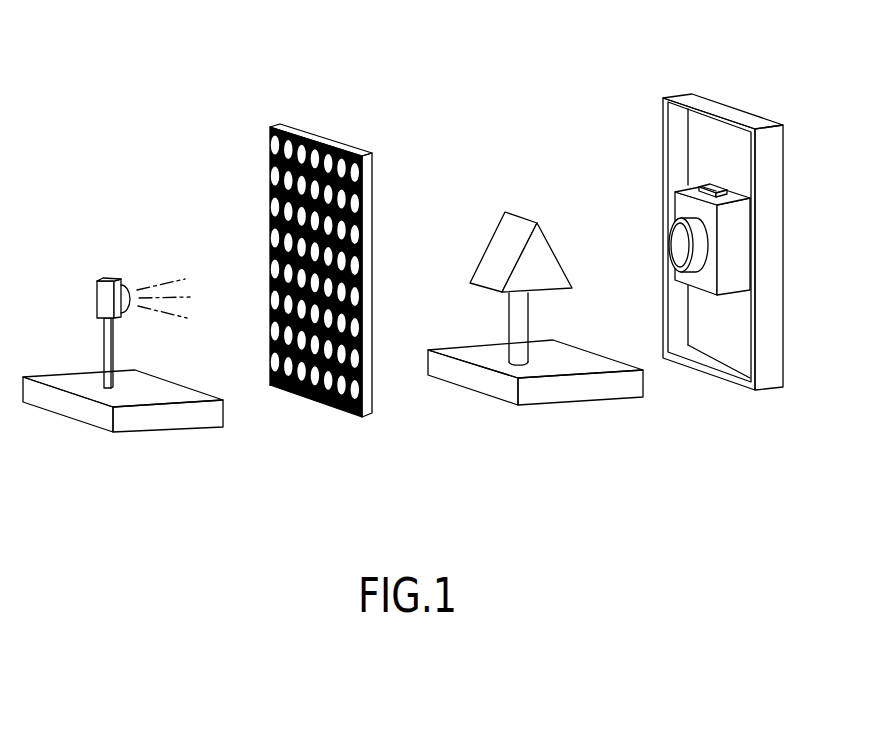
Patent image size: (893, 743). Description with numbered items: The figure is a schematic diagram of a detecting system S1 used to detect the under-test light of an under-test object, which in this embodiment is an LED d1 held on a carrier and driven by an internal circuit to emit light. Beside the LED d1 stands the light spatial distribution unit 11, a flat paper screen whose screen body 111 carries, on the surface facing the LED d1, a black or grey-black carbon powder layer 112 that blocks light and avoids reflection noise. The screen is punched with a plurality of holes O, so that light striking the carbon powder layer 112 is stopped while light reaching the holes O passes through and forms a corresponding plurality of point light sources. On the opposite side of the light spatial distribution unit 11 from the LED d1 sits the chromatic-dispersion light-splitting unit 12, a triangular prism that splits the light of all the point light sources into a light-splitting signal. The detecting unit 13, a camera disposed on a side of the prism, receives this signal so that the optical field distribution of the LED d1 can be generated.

The detecting system S1 is at (142, 62).
The LED d1 is at (103, 298).
The light spatial distribution unit 11 is at (310, 135).
The screen body 111 is at (367, 368).
The carbon powder layer 112 is at (323, 405).
The holes O is at (270, 385).
The chromatic-dispersion light-splitting unit 12 is at (488, 253).
The detecting unit 13 is at (670, 243).